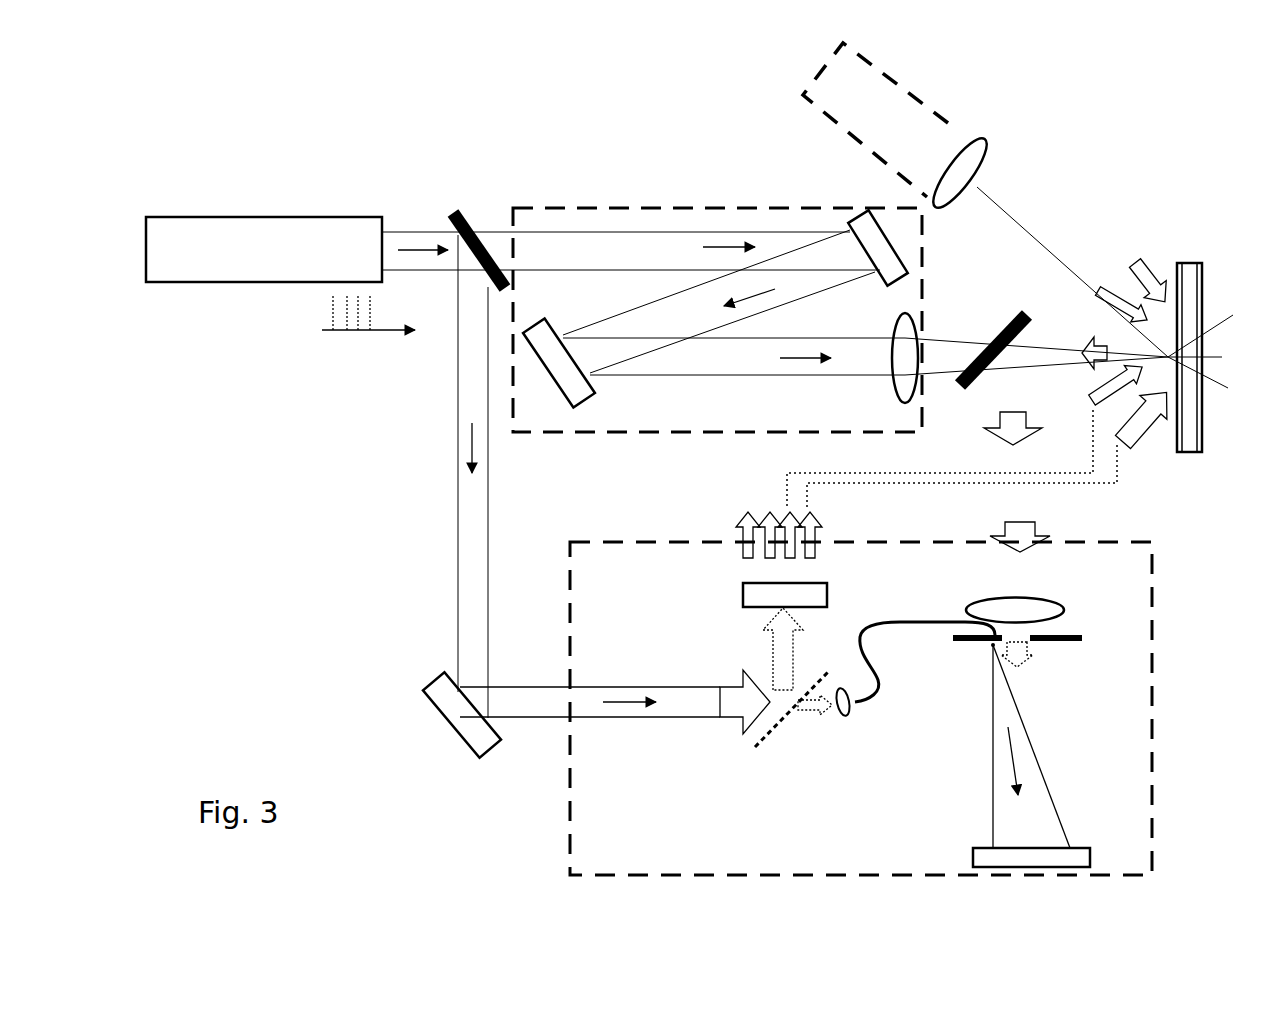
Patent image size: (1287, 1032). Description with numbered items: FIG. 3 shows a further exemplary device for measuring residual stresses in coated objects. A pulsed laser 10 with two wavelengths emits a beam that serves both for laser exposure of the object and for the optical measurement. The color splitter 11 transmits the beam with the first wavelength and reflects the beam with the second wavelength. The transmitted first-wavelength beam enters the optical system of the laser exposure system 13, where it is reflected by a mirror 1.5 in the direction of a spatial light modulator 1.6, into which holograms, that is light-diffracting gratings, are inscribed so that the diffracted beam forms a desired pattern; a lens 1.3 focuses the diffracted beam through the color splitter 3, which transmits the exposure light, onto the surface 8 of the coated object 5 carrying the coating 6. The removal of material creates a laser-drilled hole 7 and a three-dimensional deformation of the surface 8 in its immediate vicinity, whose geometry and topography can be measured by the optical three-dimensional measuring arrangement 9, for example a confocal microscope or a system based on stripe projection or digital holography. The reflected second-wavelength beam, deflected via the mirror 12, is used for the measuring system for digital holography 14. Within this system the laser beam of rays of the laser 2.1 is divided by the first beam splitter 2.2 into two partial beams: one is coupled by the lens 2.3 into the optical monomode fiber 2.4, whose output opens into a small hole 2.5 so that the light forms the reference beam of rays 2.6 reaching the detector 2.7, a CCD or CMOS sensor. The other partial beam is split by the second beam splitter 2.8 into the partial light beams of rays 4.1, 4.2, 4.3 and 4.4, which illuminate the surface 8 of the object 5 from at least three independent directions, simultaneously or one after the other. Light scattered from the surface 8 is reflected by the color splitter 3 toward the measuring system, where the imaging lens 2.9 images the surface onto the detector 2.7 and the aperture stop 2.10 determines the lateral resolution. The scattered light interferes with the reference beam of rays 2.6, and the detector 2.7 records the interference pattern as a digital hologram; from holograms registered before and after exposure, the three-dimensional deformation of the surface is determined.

The pulsed laser with two wavelengths 10 is at (235, 217).
The color splitter 11 is at (455, 215).
The mirror 12 is at (447, 722).
The optical system for laser exposure system 13 is at (703, 205).
The measuring system for digital holography 14 is at (1157, 640).
The lens 1.3 is at (895, 393).
The mirror 1.5 is at (876, 275).
The spatial light modulator 1.6 is at (585, 402).
The color splitter 3 is at (1027, 315).
The coated object 5 is at (1190, 262).
The coating 6 is at (1186, 452).
The laser-drilled hole 7 is at (1208, 357).
The surface of the object 8 is at (1213, 353).
The optical 3D measuring arrangement 9 is at (957, 132).
The partial light beam of rays 4.1 is at (1137, 393).
The partial light beam of rays 4.2 is at (1097, 407).
The partial light beam of rays 4.3 is at (1100, 290).
The partial light beam of rays 4.4 is at (1140, 262).
The laser 2.1 is at (668, 732).
The first beam splitter 2.2 is at (792, 712).
The lens 2.3 is at (845, 717).
The optical monomode fiber 2.4 is at (908, 627).
The small hole 2.5 is at (990, 647).
The reference beam of rays 2.6 is at (1032, 805).
The detector 2.7 is at (1035, 848).
The second beam splitter 2.8 is at (745, 594).
The imaging lens 2.9 is at (1062, 605).
The aperture stop 2.10 is at (1063, 647).